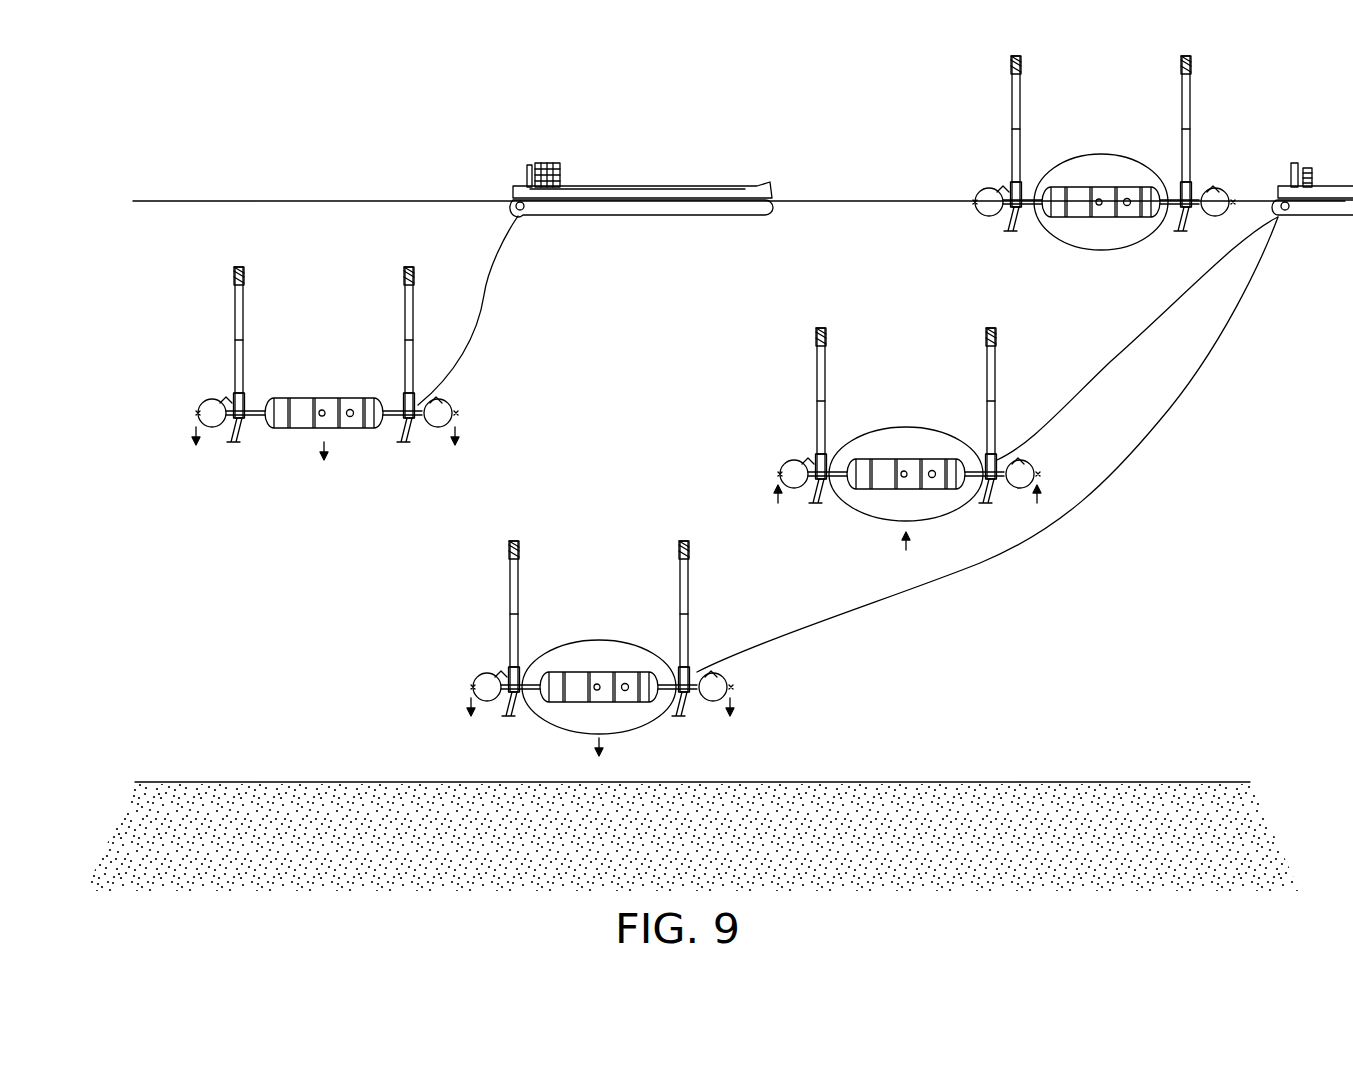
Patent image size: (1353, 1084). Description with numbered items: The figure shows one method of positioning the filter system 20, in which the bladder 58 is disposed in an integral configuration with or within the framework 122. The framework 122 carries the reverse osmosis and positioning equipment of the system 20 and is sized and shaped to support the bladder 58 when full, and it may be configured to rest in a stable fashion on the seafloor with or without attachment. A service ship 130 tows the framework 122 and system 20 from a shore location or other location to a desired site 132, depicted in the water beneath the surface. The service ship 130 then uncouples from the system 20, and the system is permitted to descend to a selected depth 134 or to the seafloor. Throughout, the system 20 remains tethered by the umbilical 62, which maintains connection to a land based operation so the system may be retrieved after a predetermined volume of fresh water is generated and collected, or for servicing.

The filter system 20 is at (217, 343).
The bladder 58 is at (907, 427).
The umbilical 62 is at (487, 285).
The framework 122 is at (400, 418).
The service ship 130 is at (643, 185).
The desired site 132 is at (622, 424).
The selected depth 134 is at (848, 754).